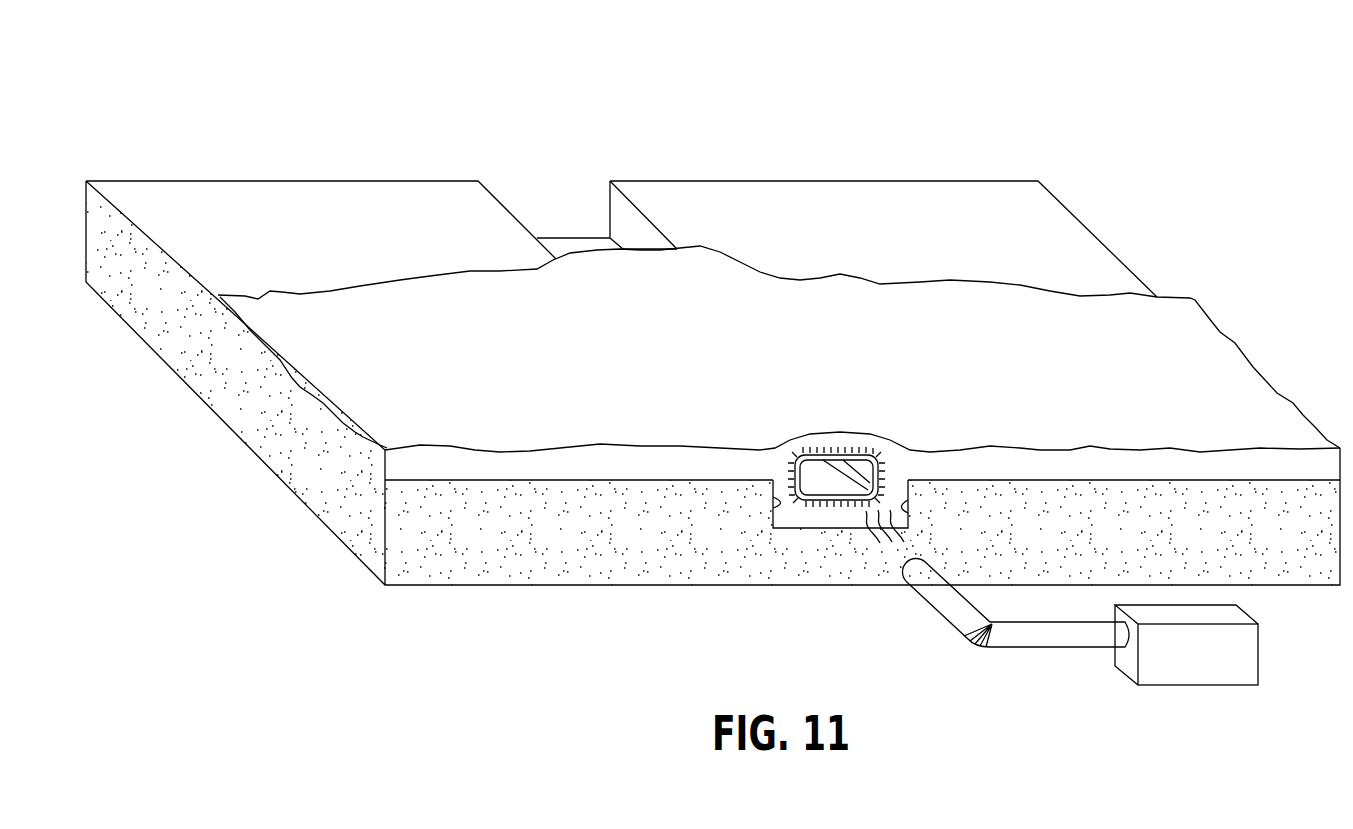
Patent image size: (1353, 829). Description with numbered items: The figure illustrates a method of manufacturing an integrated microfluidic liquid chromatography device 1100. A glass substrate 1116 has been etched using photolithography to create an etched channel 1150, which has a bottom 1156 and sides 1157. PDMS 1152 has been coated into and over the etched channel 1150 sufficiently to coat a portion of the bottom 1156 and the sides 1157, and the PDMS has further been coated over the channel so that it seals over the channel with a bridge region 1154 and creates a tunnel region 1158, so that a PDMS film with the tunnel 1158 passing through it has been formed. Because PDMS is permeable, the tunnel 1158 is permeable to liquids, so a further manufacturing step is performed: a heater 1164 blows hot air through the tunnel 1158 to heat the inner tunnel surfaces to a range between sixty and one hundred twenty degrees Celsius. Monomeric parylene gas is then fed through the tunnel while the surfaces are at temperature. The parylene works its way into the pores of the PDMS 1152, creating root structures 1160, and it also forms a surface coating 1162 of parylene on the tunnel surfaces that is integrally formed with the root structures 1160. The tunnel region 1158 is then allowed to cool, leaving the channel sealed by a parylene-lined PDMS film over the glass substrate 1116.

The device 1100 is at (203, 98).
The glass substrate 1116 is at (547, 538).
The etched channel 1150 is at (563, 237).
The PDMS 1152 is at (1197, 462).
The bridge region 1154 is at (801, 448).
The bottom 1156 is at (822, 528).
The sides 1157 is at (765, 512).
The tunnel region 1158 is at (837, 489).
The root structures 1160 is at (823, 452).
The surface coating 1162 is at (858, 448).
The heater 1164 is at (1172, 676).